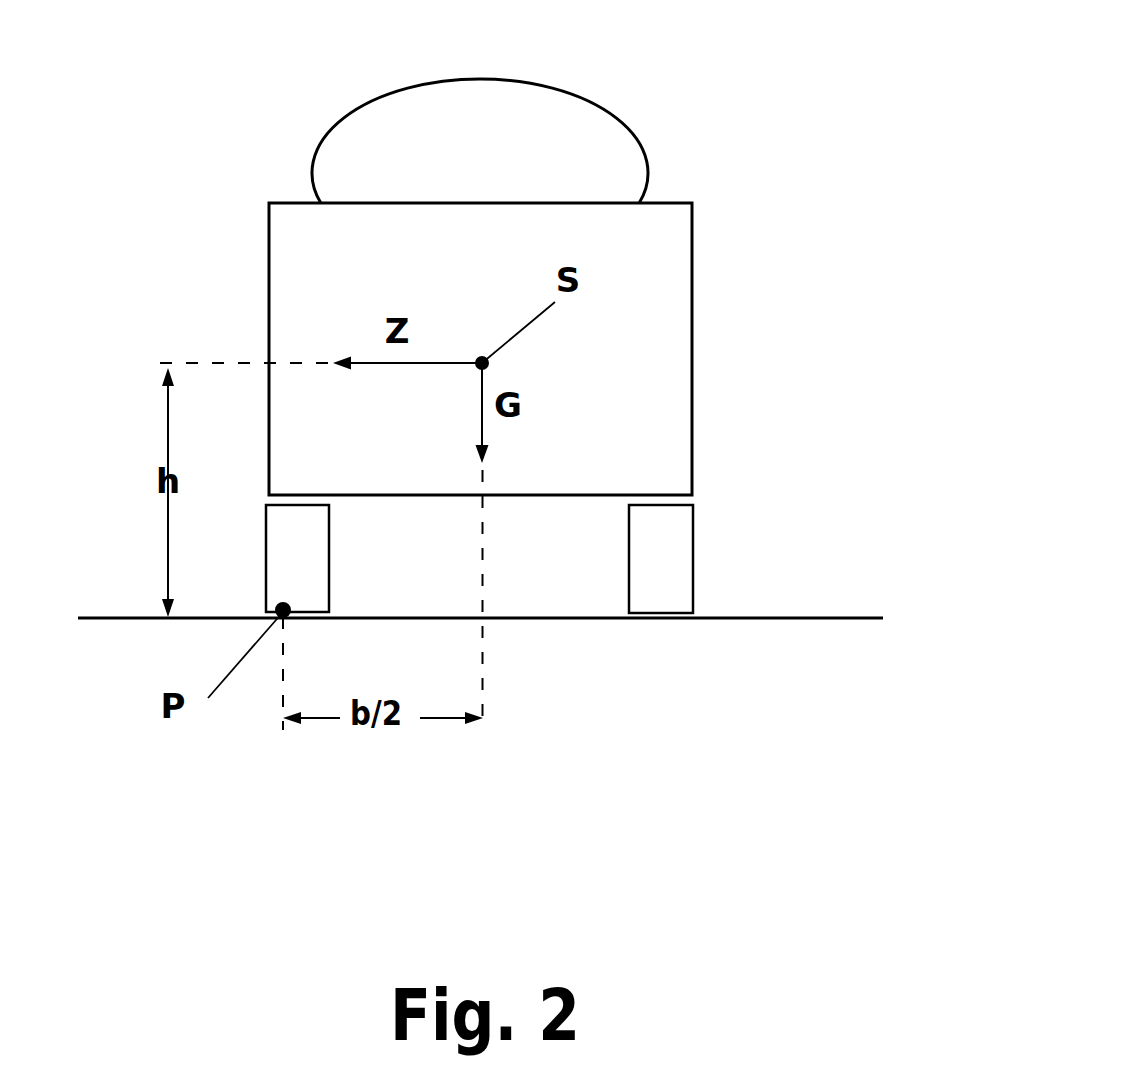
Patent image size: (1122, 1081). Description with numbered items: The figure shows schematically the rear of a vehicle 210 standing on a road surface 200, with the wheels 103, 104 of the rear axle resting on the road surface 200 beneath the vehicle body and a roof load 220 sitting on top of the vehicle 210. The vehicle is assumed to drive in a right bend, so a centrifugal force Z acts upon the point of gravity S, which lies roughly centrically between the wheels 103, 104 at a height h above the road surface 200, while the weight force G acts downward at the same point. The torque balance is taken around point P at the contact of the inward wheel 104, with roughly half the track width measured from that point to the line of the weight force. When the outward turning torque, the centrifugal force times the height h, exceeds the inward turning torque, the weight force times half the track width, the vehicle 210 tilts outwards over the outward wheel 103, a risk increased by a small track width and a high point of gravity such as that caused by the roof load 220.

The roof load 220 is at (558, 132).
The vehicle 210 is at (662, 404).
The wheel on the rear axle 104 is at (297, 562).
The wheel on the rear axle 103 is at (670, 584).
The road surface 200 is at (824, 618).